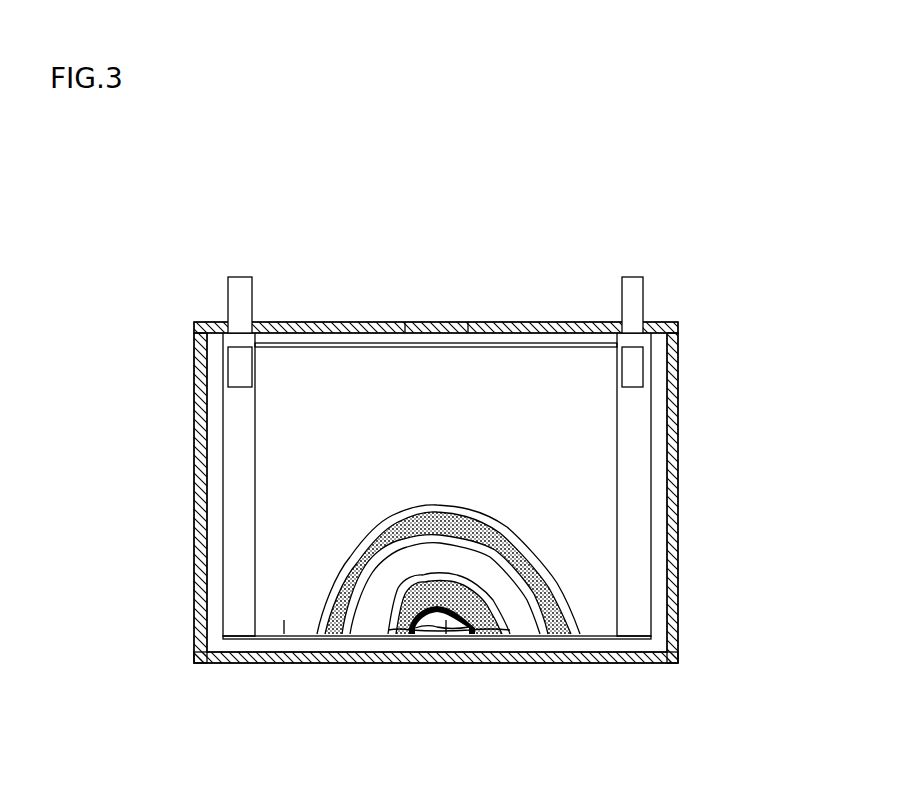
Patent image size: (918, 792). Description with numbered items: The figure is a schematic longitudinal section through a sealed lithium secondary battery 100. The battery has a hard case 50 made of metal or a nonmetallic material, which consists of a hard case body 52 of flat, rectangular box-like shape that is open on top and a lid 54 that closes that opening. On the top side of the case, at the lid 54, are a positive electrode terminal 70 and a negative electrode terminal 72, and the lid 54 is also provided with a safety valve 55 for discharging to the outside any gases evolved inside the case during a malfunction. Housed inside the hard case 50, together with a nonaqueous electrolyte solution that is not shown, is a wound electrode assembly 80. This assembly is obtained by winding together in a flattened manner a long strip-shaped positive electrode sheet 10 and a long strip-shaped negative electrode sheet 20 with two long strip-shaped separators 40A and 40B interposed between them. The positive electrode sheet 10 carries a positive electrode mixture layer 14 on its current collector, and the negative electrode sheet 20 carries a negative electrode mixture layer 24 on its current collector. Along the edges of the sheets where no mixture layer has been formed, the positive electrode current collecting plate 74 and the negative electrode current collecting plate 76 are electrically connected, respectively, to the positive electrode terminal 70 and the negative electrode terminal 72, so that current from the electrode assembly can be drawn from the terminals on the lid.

The sealed lithium secondary battery 100 is at (674, 215).
The hard case 50 is at (679, 488).
The hard case body 52 is at (678, 612).
The lid 54 is at (553, 322).
The safety valve 55 is at (428, 323).
The positive electrode terminal 70 is at (241, 276).
The negative electrode terminal 72 is at (632, 276).
The positive electrode current collecting plate 74 is at (236, 546).
The negative electrode current collecting plate 76 is at (640, 563).
The wound electrode assembly 80 is at (596, 638).
The positive electrode sheet 10 is at (328, 622).
The positive electrode mixture layer 14 is at (436, 636).
The negative electrode sheet 20 is at (407, 618).
The negative electrode mixture layer 24 is at (449, 669).
The separator 40A is at (284, 618).
The separator 40B is at (375, 620).